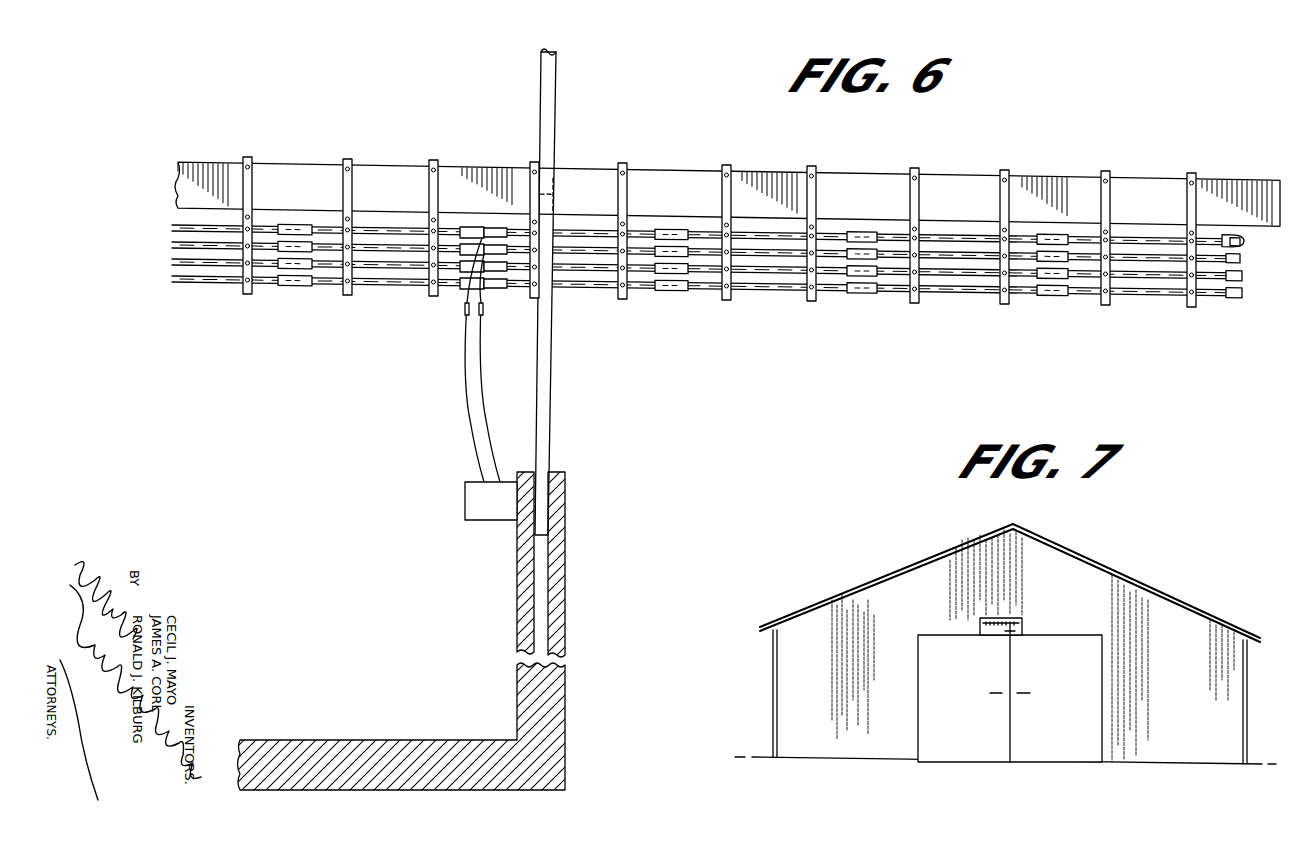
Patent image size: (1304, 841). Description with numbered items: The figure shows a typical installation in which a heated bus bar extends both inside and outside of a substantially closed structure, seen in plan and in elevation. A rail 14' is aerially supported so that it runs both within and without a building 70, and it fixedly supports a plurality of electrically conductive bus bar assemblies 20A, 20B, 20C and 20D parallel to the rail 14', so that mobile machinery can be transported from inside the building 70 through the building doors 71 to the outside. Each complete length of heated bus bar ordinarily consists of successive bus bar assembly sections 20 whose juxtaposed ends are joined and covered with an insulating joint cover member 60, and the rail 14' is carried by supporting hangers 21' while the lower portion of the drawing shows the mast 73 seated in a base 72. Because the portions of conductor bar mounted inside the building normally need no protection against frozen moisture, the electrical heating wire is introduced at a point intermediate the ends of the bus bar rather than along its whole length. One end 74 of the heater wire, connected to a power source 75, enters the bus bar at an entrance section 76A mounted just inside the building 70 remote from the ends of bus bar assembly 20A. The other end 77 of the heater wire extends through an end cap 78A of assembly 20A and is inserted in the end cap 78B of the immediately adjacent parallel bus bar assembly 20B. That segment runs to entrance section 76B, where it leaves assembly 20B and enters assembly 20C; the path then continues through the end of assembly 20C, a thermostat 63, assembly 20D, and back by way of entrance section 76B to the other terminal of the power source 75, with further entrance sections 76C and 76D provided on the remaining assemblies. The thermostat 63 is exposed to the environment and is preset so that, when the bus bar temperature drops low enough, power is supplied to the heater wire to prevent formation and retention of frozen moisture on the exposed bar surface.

In FIG. 6, the rail 14' is at (727, 174).
In FIG. 7, the rail 14' is at (1025, 603).
In FIG. 6, the bus bar assembly sections 20 is at (733, 253).
In FIG. 6, the bus bar assembly 20A is at (576, 293).
In FIG. 6, the bus bar assembly 20B is at (784, 281).
In FIG. 6, the bus bar assembly 20C is at (976, 266).
In FIG. 6, the bus bar assembly 20D is at (1144, 244).
In FIG. 6, the hanger strap 21' is at (719, 215).
In FIG. 6, the joint cover member 60 is at (673, 300).
In FIG. 6, the thermostat 63 is at (1210, 233).
In FIG. 7, the building 70 is at (1100, 578).
In FIG. 7, the building doors 71 is at (1078, 669).
In FIG. 6, the socket base 72 is at (402, 631).
In FIG. 6, the mast 73 is at (545, 292).
In FIG. 6, the one end of the heater wire 74 is at (481, 386).
In FIG. 6, the power source 75 is at (506, 507).
In FIG. 6, the entrance section 76A is at (485, 288).
In FIG. 6, the entrance section 76B is at (470, 267).
In FIG. 6, the hose fitting 76C is at (466, 249).
In FIG. 6, the hose fitting 76D is at (470, 232).
In FIG. 6, the other end of the heater wire 77 is at (1262, 284).
In FIG. 6, the end cap 78A is at (1236, 298).
In FIG. 6, the end cap 78B is at (1243, 262).